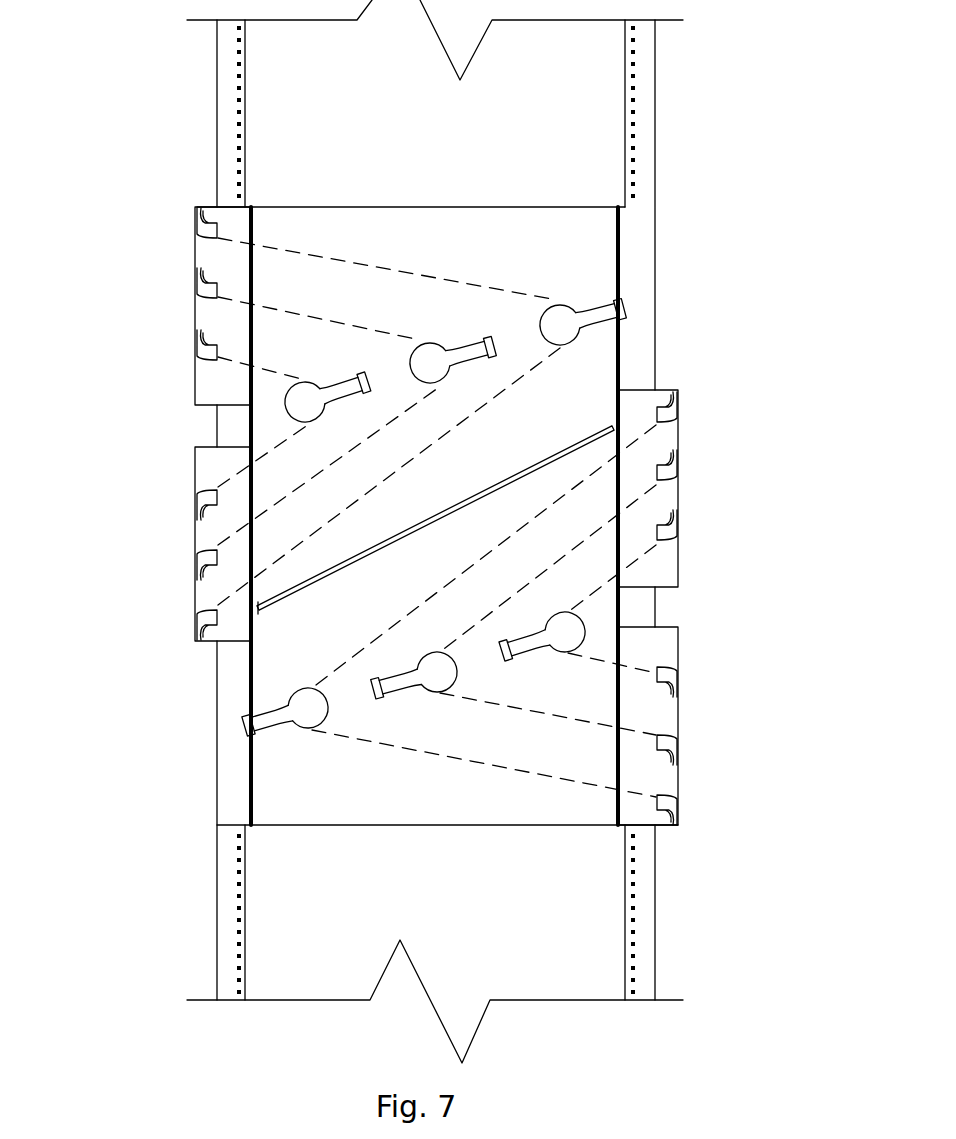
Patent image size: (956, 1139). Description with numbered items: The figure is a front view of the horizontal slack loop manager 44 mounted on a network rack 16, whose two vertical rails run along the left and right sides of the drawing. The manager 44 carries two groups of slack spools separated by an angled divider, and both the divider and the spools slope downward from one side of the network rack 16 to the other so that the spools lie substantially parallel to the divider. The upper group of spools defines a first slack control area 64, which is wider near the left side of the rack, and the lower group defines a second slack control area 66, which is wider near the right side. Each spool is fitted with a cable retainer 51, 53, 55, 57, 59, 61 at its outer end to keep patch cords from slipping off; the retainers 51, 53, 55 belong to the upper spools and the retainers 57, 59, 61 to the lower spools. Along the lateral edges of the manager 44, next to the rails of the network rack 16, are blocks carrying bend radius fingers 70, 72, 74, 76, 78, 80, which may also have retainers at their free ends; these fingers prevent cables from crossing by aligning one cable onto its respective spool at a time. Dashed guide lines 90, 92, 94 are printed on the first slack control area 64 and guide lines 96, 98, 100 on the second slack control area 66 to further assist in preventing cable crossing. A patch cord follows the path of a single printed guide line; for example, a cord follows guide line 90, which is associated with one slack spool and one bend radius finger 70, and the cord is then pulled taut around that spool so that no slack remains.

The network rack 16 is at (665, 167).
The horizontal slack loop manager 44 is at (770, 480).
The cable retainer 51 is at (352, 393).
The cable retainer 53 is at (484, 344).
The cable retainer 55 is at (626, 306).
The cable retainer 57 is at (505, 645).
The cable retainer 59 is at (382, 692).
The cable retainer 61 is at (247, 727).
The first slack control area 64 is at (510, 230).
The second slack control area 66 is at (351, 773).
The bend radius finger 70 is at (198, 350).
The bend radius finger 72 is at (198, 288).
The bend radius finger 74 is at (198, 227).
The bend radius finger 76 is at (678, 402).
The bend radius finger 78 is at (680, 475).
The bend radius finger 80 is at (678, 522).
The guide line 90 is at (300, 376).
The guide line 92 is at (337, 327).
The guide line 94 is at (412, 270).
The guide line 96 is at (612, 667).
The guide line 98 is at (527, 708).
The guide line 100 is at (495, 762).